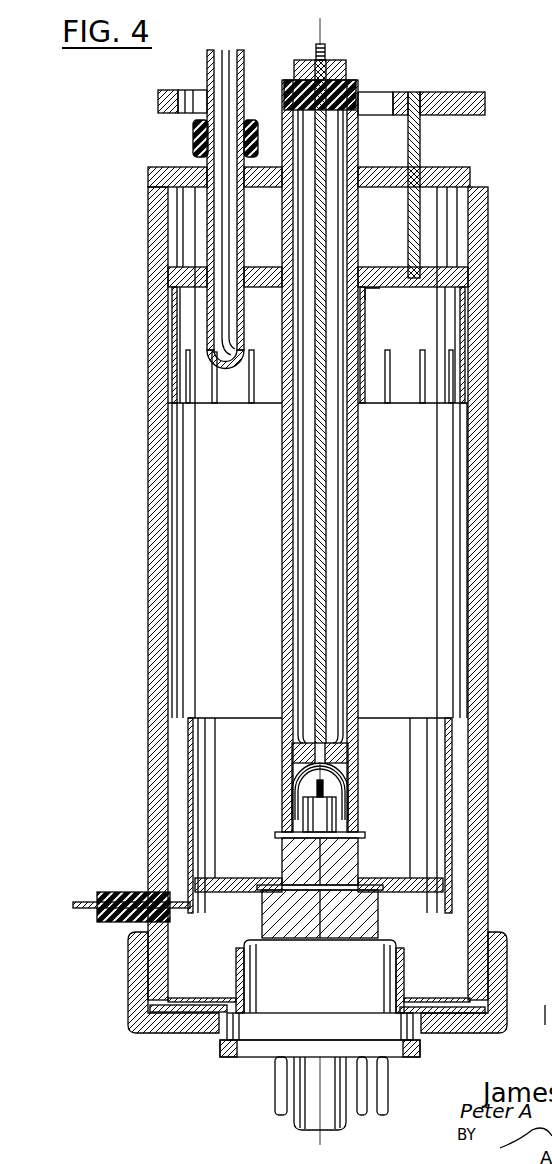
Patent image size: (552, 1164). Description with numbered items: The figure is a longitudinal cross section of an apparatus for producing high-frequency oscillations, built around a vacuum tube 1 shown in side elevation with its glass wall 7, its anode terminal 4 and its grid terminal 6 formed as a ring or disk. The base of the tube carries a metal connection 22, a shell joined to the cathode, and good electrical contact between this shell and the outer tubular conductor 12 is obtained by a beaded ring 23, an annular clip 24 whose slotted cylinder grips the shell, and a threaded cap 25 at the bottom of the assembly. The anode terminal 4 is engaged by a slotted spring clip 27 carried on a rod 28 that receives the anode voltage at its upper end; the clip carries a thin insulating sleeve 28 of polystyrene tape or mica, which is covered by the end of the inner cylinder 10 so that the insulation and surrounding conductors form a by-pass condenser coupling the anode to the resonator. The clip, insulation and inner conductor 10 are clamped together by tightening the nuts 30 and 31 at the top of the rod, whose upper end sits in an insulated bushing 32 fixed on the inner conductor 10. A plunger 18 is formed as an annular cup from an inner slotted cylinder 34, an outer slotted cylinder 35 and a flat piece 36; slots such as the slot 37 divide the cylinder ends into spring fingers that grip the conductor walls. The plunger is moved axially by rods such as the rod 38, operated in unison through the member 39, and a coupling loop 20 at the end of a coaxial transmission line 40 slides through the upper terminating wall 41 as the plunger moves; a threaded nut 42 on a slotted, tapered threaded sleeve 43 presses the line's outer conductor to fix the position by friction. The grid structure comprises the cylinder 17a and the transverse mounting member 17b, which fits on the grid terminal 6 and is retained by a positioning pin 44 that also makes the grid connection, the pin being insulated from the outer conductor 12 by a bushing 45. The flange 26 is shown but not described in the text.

The vacuum tube 1 is at (286, 1020).
The anode terminal 4 is at (334, 814).
The grid terminal 6 is at (270, 906).
The glass wall 7 is at (358, 855).
The inner cylinder 10 is at (284, 579).
The outer tubular conductor 12 is at (482, 592).
The cylinder 17a is at (193, 740).
The transverse mounting member 17b is at (226, 878).
The plunger 18 is at (203, 404).
The coupling loop 20 is at (217, 362).
The metal connection 22 is at (392, 940).
The beaded ring 23 is at (178, 998).
The annular clip 24 is at (236, 968).
The threaded cap 25 is at (132, 1030).
The flange 26 is at (274, 888).
The clip 27 is at (282, 816).
The rod 28 is at (326, 628).
The nut 30 is at (347, 70).
The nut 31 is at (333, 60).
The insulated bushing 32 is at (290, 82).
The inner slotted cylinder 34 is at (364, 334).
The outer slotted cylinder 35 is at (462, 324).
The flat piece 36 is at (381, 290).
The slot 37 is at (391, 364).
The rod 38 is at (420, 147).
The member 39 is at (158, 101).
The coaxial transmission line 40 is at (238, 222).
The upper terminating wall 41 is at (176, 167).
The threaded nut 42 is at (190, 131).
The slotted and tapered threaded sleeve 43 is at (252, 150).
The positioning pin 44 is at (76, 910).
The bushing 45 is at (100, 922).